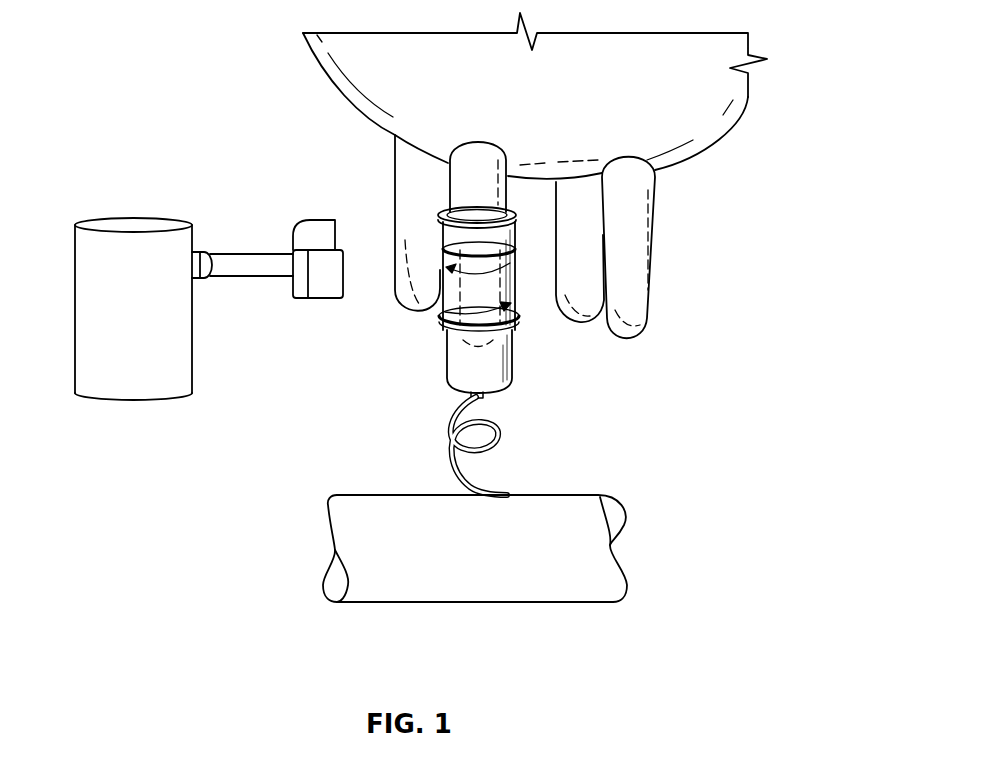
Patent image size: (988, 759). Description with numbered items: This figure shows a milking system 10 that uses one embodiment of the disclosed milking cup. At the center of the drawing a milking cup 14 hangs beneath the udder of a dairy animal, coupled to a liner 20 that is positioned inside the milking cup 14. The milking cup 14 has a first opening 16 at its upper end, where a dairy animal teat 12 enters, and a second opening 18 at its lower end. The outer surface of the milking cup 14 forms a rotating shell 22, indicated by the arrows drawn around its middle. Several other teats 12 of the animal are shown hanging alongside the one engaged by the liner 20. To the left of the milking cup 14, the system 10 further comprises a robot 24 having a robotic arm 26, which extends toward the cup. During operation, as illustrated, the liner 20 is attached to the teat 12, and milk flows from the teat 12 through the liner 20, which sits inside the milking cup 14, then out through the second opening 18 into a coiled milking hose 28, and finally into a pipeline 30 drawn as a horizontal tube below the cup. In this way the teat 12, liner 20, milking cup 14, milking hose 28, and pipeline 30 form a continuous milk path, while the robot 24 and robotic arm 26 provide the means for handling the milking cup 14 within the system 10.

The system 10 is at (394, 307).
The dairy animal teat 12 is at (453, 174).
The milking cup 14 is at (502, 338).
The first opening 16 is at (447, 213).
The second opening 18 is at (488, 392).
The liner 20 is at (462, 304).
The rotating shell 22 is at (487, 287).
The robot 24 is at (85, 303).
The robotic arm 26 is at (250, 260).
The milking hose 28 is at (450, 413).
The pipeline 30 is at (560, 507).